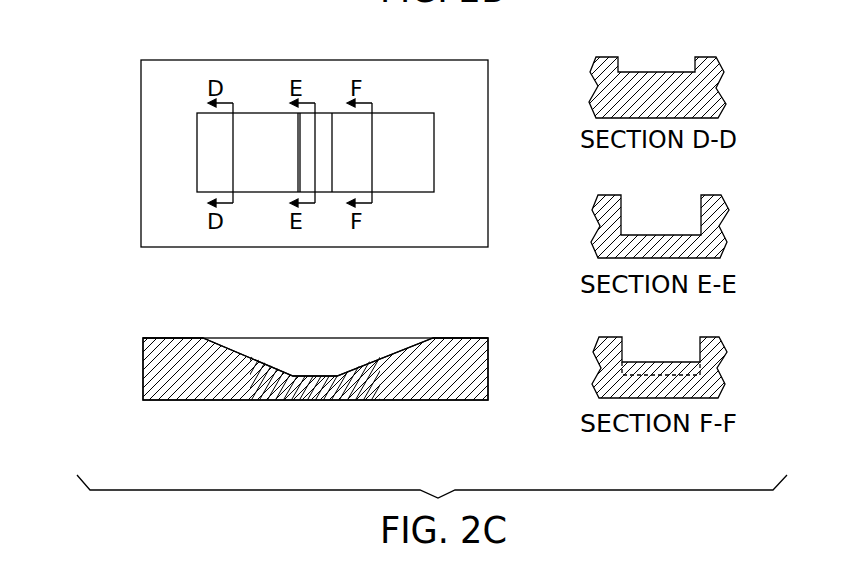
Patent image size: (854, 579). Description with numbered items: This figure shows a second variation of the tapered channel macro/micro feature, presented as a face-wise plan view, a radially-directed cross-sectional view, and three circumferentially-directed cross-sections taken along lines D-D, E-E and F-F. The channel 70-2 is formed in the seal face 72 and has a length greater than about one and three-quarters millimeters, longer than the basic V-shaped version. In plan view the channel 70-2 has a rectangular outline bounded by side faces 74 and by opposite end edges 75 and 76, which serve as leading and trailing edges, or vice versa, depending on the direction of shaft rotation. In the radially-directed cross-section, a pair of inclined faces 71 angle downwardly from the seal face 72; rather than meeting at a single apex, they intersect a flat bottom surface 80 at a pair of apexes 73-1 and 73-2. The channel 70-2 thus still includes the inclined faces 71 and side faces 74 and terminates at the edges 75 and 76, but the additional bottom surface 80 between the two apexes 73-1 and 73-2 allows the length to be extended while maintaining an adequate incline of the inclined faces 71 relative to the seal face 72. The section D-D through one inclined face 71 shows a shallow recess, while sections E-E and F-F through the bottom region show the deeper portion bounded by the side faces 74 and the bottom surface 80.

The channel 70-2 is at (418, 79).
The inclined channel faces 71 is at (393, 127).
The seal face 72 is at (175, 78).
The apex 73-1 is at (297, 160).
The apex 73-2 is at (332, 157).
The side faces 74 is at (258, 113).
The end edge 75 is at (434, 150).
The end edge 76 is at (197, 155).
The flat bottom surface 80 is at (311, 378).